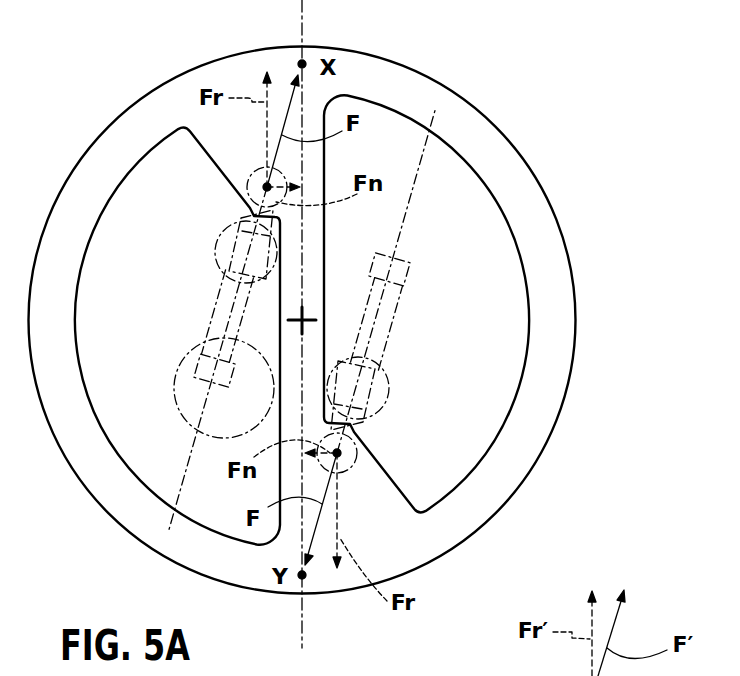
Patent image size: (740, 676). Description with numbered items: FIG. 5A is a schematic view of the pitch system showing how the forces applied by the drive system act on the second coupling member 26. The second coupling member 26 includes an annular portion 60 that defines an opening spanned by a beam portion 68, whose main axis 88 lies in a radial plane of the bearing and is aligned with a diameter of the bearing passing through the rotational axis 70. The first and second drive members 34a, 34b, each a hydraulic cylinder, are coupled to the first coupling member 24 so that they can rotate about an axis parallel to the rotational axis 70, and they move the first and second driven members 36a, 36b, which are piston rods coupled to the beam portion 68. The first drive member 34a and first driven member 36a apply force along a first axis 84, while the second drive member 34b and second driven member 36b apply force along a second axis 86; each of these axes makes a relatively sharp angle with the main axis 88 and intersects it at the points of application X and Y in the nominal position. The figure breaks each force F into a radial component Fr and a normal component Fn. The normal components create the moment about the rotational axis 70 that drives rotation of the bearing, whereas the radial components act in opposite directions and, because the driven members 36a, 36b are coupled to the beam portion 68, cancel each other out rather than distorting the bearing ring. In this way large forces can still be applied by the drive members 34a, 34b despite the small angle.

The first coupling member 24 is at (302, 319).
The second coupling member 26 is at (320, 320).
The first drive member 34a is at (206, 360).
The second drive member 34b is at (401, 280).
The first driven member 36a is at (254, 213).
The second driven member 36b is at (353, 438).
The annular portion 60 is at (566, 252).
The beam portion 68 is at (322, 153).
The rotational axis 70 is at (309, 325).
The first axis 84 is at (193, 445).
The second axis 86 is at (410, 208).
The main axis 88 is at (300, 11).